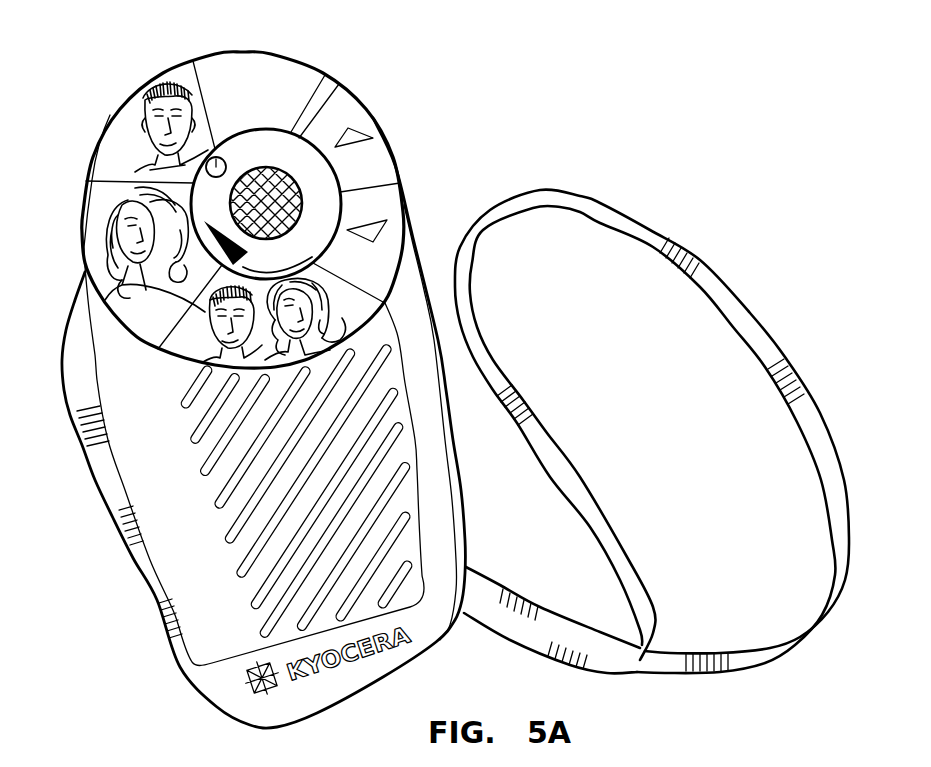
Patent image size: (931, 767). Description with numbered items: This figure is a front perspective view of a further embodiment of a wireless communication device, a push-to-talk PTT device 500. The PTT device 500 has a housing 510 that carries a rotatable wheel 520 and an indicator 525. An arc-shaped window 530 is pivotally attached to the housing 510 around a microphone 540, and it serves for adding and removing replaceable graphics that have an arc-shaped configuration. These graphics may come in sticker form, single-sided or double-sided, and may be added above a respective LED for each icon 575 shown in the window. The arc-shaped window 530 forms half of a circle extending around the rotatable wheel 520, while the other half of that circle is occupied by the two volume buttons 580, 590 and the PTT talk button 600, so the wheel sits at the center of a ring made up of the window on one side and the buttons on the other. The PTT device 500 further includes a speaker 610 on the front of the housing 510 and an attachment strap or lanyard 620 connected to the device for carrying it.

The PTT device 500 is at (447, 78).
The housing 510 is at (113, 315).
The rotatable wheel 520 is at (322, 77).
The indicator 525 is at (206, 163).
The arc-shaped window 530 is at (183, 75).
The microphone 540 is at (260, 166).
The icon 575 is at (140, 88).
The volume button 580 is at (360, 133).
The volume button 590 is at (390, 227).
The PTT talk button 600 is at (198, 360).
The speaker 610 is at (267, 517).
The attachment strap or lanyard 620 is at (533, 204).